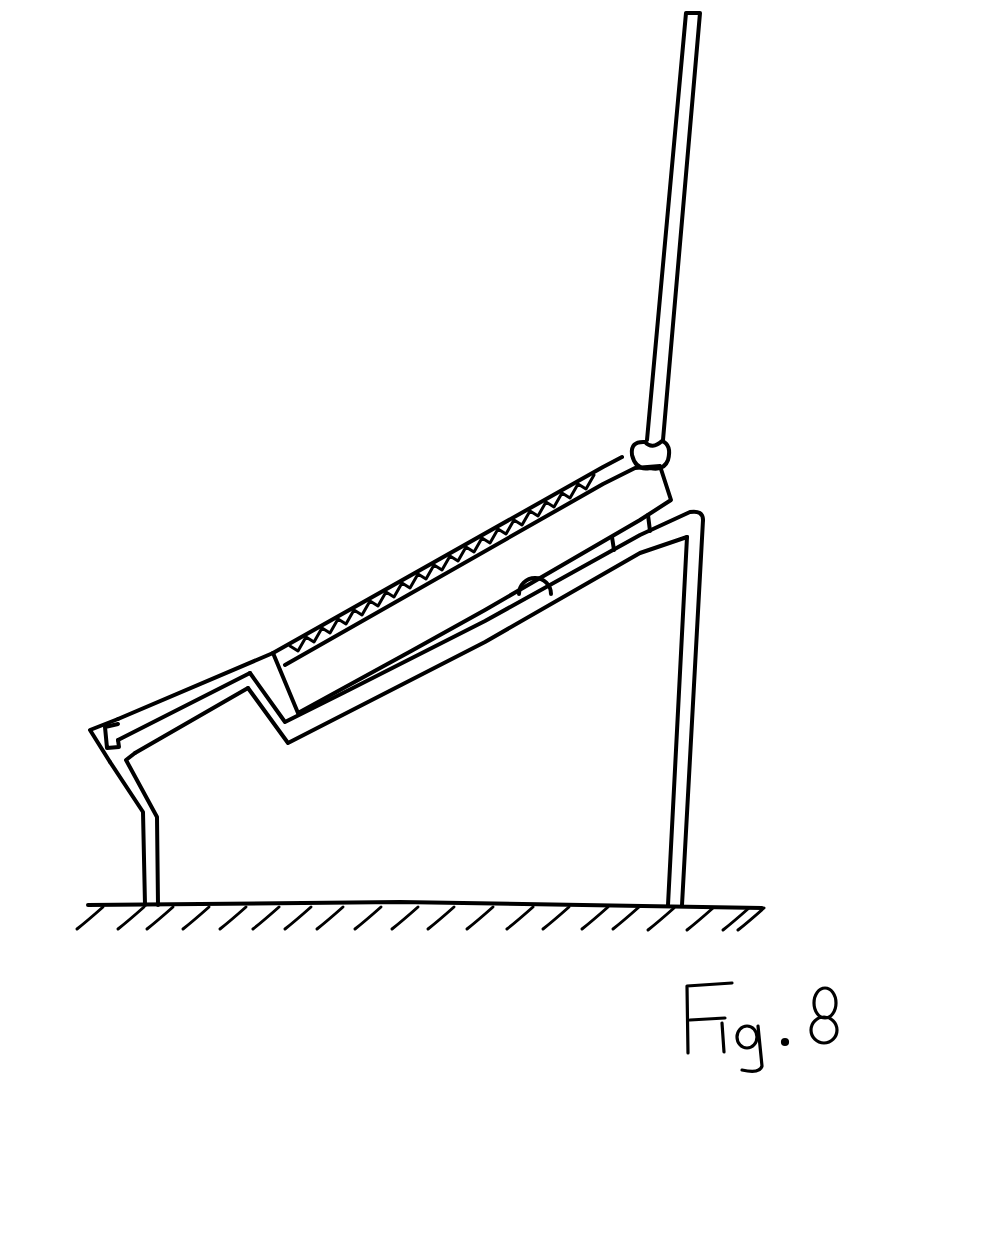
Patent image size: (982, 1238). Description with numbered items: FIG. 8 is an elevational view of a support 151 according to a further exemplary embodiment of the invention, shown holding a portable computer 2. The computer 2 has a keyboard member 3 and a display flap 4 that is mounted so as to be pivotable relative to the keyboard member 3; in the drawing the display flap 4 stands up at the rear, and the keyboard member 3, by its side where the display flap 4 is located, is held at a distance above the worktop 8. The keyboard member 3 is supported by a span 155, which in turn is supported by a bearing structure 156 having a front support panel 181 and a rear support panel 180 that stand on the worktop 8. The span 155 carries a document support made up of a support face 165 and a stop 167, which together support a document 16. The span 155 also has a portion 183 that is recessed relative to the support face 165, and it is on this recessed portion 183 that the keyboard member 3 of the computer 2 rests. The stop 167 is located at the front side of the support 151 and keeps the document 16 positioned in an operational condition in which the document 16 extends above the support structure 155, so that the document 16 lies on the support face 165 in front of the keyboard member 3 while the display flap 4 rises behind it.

The portable computer 2 is at (698, 387).
The keyboard member 3 is at (413, 657).
The display flap 4 is at (680, 238).
The worktop 8 is at (470, 904).
The document 16 is at (227, 672).
The support 151 is at (738, 602).
The span 155 is at (482, 650).
The bearing structure 156 is at (694, 834).
The support face 165 is at (182, 708).
The stop 167 is at (112, 714).
The rear support panel 180 is at (694, 763).
The front support panel 181 is at (162, 857).
The recessed portion 183 is at (552, 590).